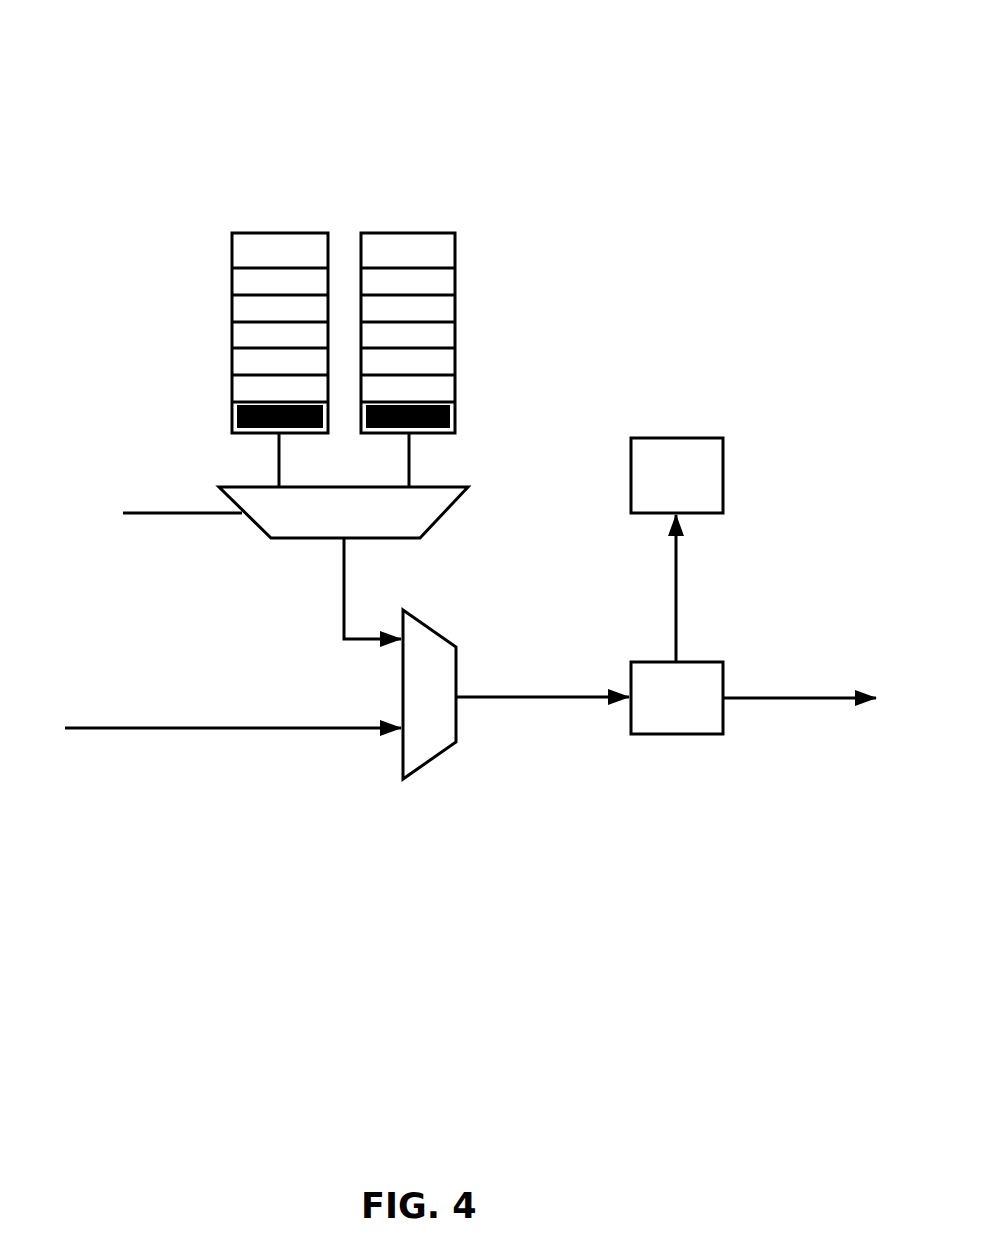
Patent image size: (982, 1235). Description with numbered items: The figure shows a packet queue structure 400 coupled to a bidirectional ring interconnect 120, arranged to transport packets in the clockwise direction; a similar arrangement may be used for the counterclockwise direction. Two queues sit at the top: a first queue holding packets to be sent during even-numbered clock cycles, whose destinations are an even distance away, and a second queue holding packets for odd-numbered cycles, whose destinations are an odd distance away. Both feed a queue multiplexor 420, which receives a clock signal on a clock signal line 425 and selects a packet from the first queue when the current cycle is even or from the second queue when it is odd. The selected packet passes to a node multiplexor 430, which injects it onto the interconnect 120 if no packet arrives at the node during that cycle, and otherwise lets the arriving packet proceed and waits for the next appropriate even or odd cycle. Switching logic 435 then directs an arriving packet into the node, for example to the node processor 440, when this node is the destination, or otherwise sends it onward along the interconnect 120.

The frame insertion system 400 is at (147, 86).
The queue multiplexor 420 is at (438, 512).
The clock signal line 425 is at (199, 513).
The node multiplexor 430 is at (452, 658).
The switching logic 435 is at (678, 734).
The node processor 440 is at (678, 438).
The interconnect 120 is at (148, 735).